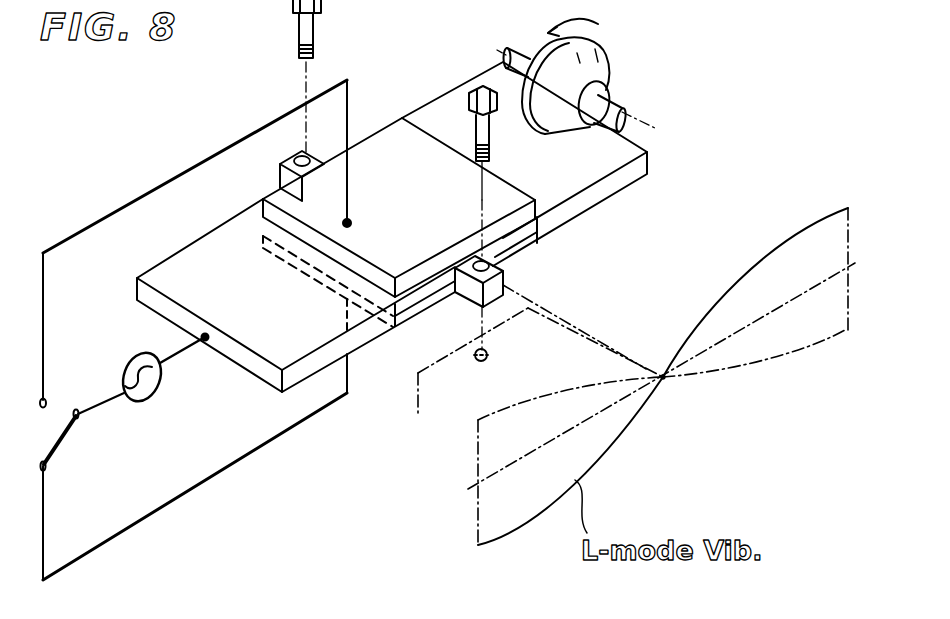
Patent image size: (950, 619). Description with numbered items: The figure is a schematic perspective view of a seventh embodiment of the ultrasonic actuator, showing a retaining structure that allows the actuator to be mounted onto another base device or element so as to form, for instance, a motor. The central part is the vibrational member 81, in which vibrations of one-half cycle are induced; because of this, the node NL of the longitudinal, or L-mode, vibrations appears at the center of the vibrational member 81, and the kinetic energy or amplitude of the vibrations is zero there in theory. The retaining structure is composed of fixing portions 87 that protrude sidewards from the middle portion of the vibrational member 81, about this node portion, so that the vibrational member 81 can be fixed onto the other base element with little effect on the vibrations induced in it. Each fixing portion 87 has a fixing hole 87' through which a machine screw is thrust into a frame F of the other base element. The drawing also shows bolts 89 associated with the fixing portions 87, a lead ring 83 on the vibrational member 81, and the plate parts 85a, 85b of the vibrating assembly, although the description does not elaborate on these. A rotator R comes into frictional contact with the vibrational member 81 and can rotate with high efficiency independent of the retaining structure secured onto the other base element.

The vibrational member 81 is at (262, 343).
The lead wire ring terminal 83 is at (129, 360).
The upper vibrator plate 85a is at (383, 150).
The lower vibrator plate 85b is at (538, 243).
The fixing portions 87 is at (406, 231).
The fixing hole 87' is at (354, 231).
The bolt 89 is at (318, 26).
The frame F is at (418, 378).
The node NL is at (668, 388).
The rotator R is at (605, 72).